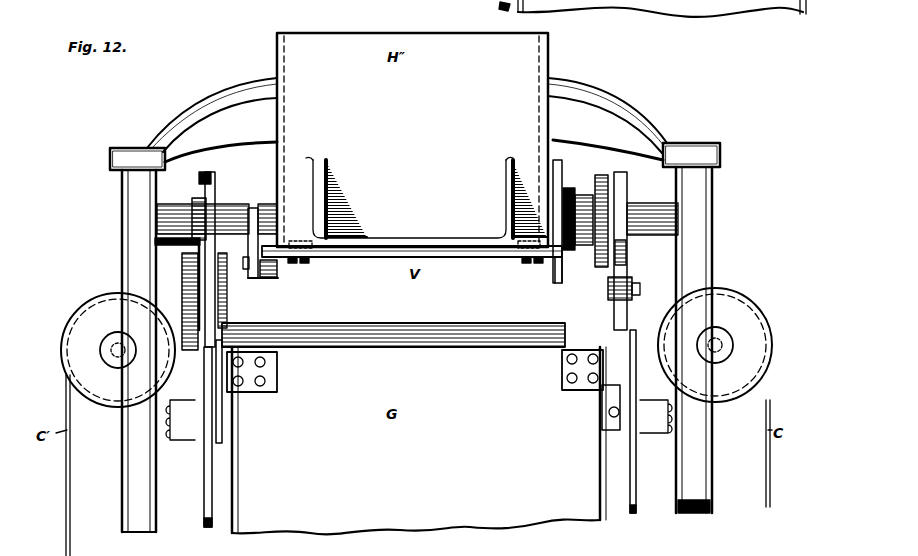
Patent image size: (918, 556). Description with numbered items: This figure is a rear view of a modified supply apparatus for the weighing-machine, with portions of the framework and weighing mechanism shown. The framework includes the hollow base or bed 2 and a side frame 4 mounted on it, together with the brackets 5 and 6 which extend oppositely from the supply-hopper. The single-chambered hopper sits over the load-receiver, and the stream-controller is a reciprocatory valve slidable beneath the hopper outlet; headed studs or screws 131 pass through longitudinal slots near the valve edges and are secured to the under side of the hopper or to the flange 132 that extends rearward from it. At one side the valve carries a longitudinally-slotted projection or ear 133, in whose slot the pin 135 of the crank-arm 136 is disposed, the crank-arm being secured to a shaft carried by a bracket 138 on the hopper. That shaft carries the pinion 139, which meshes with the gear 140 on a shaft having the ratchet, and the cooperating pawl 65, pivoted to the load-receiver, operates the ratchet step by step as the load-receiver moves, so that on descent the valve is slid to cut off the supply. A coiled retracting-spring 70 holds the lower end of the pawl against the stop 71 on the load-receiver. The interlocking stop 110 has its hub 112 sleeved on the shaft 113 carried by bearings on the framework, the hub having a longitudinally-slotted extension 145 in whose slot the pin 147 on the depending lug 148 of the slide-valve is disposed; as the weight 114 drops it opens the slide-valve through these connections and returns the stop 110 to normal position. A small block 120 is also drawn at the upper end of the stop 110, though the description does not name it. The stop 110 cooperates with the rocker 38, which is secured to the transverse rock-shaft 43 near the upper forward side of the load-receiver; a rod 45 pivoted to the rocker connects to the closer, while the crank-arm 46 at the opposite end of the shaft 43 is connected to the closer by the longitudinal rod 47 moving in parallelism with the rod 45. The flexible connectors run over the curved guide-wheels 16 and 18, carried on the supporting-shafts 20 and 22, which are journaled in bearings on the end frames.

The base or bed 2 is at (700, 212).
The side frame 4 is at (135, 205).
The bracket 5 is at (583, 92).
The bracket 6 is at (241, 90).
The guide-wheel 16 is at (750, 337).
The guide-wheel 18 is at (82, 353).
The supporting-shaft 20 is at (718, 346).
The supporting-shaft 22 is at (114, 346).
The rocker 38 is at (219, 389).
The rock-shaft 43 is at (407, 330).
The rod 45 is at (203, 461).
The crank-arm 46 is at (608, 302).
The longitudinal rod 47 is at (630, 505).
The actuator or pawl 65 is at (630, 261).
The coiled retracting-spring 70 is at (609, 420).
The stop 71 is at (601, 391).
The stop or rocker 110 is at (218, 176).
The hub 112 is at (237, 205).
The rock-shaft or pivot 113 is at (204, 206).
The weight 114 is at (185, 289).
The block 120 is at (205, 172).
The headed studs or screws 131 is at (305, 261).
The flange 132 is at (426, 244).
The longitudinally-slotted projection or ear 133 is at (562, 164).
The pin 135 is at (550, 187).
The crank-arm 136 is at (568, 207).
The bracket 138 is at (584, 192).
The pinion 139 is at (620, 210).
The gear 140 is at (618, 176).
The longitudinally-slotted extension 145 is at (270, 210).
The pin 147 is at (243, 268).
The depending lug 148 is at (278, 268).